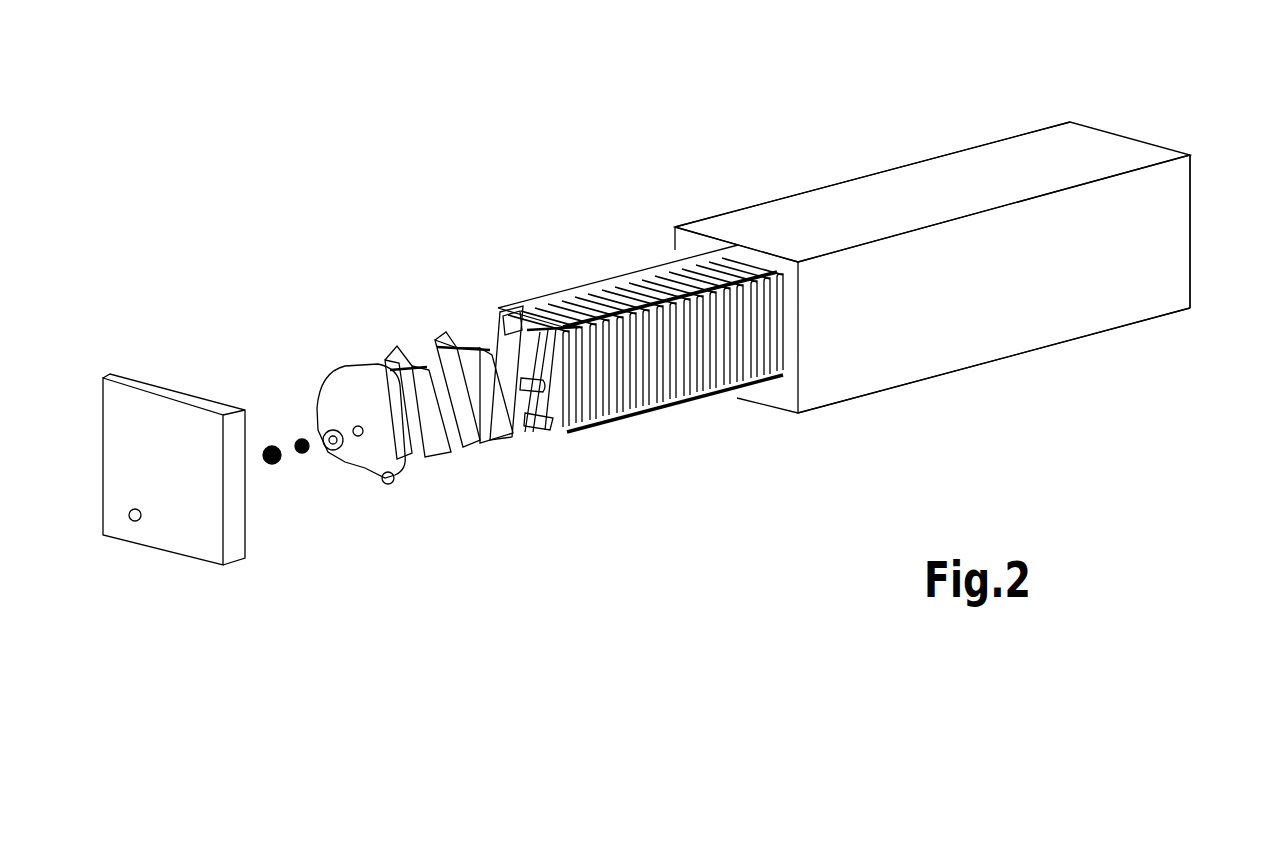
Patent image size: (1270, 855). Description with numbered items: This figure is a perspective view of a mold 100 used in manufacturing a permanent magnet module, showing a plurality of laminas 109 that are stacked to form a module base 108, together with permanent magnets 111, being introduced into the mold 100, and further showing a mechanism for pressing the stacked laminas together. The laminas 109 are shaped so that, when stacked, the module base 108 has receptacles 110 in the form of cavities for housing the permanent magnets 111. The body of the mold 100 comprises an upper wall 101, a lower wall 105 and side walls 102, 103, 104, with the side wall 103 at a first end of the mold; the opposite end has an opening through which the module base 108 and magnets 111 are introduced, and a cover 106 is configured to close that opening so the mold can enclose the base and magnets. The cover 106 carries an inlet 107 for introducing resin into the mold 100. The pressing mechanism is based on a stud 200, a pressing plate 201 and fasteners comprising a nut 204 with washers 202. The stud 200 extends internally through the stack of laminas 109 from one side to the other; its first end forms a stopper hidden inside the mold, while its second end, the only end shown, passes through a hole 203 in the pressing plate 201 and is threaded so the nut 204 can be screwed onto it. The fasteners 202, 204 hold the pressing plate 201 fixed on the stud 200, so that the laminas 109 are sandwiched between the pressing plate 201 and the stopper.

The mold 100 is at (870, 129).
The upper wall 101 is at (793, 216).
The side wall 102 is at (993, 129).
The side wall 103 is at (1203, 232).
The side wall 104 is at (1122, 302).
The lower wall 105 is at (951, 389).
The cover 106 is at (166, 462).
The inlet 107 is at (133, 522).
The module base 108 is at (640, 355).
The laminas 109 is at (606, 283).
The receptacles 110 is at (518, 342).
The permanent magnets 111 is at (447, 338).
The stud 200 is at (536, 395).
The pressing plate 201 is at (338, 380).
The washers 202 is at (323, 432).
The hole 203 is at (360, 436).
The nut 204 is at (272, 464).